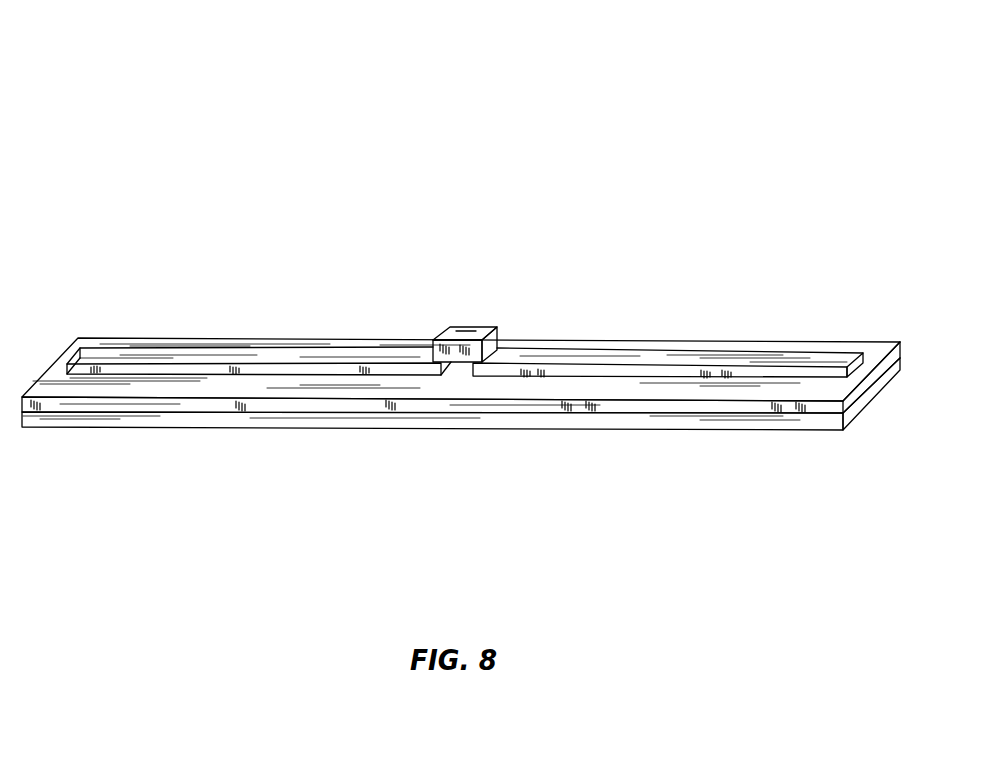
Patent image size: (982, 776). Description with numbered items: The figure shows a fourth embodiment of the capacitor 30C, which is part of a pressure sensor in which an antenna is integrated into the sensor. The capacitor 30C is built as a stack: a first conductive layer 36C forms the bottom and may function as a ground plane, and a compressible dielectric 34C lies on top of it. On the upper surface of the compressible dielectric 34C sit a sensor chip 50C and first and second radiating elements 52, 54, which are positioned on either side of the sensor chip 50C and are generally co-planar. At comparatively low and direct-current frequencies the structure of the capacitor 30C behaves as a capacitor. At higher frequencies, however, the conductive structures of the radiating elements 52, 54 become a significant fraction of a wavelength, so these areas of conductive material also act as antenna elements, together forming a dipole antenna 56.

The capacitor 30C is at (808, 102).
The dipole antenna 56 is at (589, 248).
The first radiating element 52 is at (204, 357).
The second radiating element 54 is at (623, 358).
The sensor chip 50C is at (466, 331).
The compressible dielectric 34C is at (748, 407).
The first conductive layer 36C is at (618, 423).